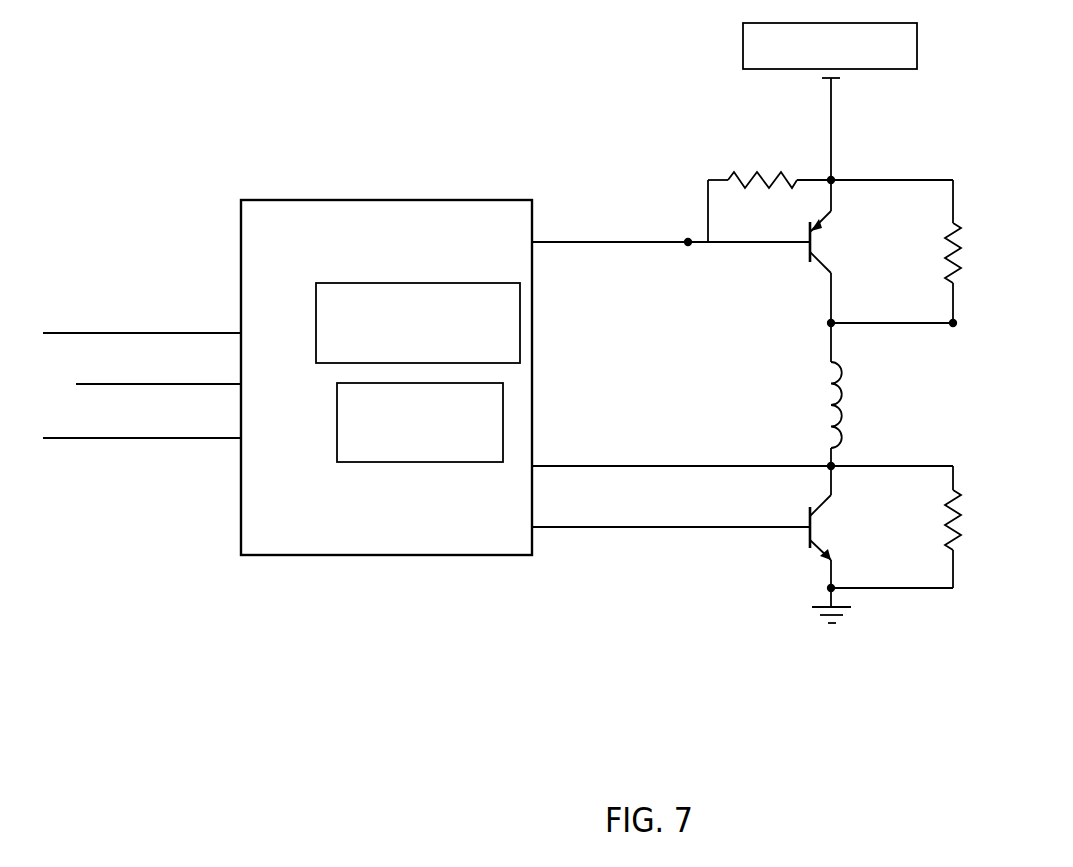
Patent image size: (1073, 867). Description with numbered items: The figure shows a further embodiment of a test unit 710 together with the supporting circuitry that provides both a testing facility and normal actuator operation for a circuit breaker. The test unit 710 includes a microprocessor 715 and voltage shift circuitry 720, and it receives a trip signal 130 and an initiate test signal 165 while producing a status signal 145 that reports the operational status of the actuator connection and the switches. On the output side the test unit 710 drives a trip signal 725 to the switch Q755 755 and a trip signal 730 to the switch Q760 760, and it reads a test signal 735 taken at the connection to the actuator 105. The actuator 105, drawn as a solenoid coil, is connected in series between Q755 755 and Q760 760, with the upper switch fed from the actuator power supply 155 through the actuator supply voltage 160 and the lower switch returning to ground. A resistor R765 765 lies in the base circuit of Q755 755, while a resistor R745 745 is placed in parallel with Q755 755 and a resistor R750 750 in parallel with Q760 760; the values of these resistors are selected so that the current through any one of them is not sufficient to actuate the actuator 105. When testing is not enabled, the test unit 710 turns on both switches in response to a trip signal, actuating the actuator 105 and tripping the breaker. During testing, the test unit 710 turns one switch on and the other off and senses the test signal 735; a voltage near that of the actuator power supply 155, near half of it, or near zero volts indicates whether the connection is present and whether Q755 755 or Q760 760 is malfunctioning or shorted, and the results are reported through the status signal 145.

The test unit 710 is at (386, 200).
The microprocessor 715 is at (316, 322).
The voltage shift circuitry 720 is at (337, 422).
The status signal 145 is at (142, 320).
The trip signal 130 is at (158, 370).
The initiate test signal 165 is at (138, 424).
The trip signal 725 is at (671, 231).
The test signal 735 is at (742, 454).
The trip signal 730 is at (671, 514).
The actuator power supply 155 is at (917, 44).
The actuator supply voltage 160 is at (840, 80).
The resistor R765 765 is at (830, 197).
The transistor Q755 755 is at (854, 252).
The resistor R745 745 is at (920, 253).
The actuator 105 is at (838, 383).
The transistor Q760 760 is at (854, 544).
The resistor R750 750 is at (923, 527).